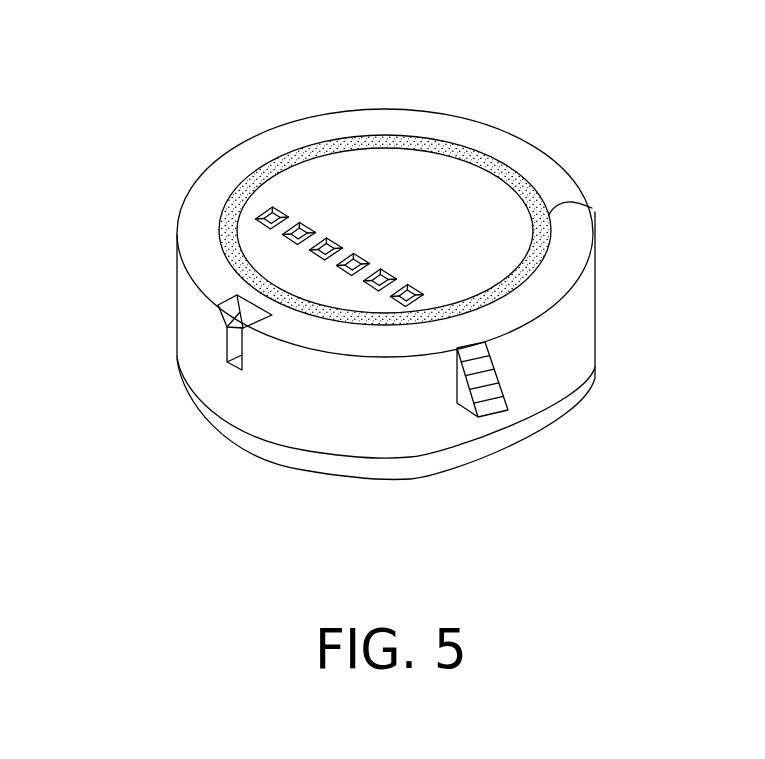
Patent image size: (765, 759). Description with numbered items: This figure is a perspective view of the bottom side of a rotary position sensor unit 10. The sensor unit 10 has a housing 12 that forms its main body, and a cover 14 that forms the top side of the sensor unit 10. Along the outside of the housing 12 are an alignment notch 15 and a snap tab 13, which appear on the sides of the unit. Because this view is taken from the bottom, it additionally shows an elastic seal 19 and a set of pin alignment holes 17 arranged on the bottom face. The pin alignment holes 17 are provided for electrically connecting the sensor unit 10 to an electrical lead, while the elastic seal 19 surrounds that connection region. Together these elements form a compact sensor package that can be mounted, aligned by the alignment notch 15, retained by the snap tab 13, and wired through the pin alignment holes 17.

The sensor unit 10 is at (574, 140).
The housing 12 is at (557, 380).
The snap tab 13 is at (470, 398).
The cover 14 is at (540, 427).
The alignment notch 15 is at (236, 346).
The pin alignment holes 17 is at (342, 245).
The elastic seal 19 is at (592, 208).